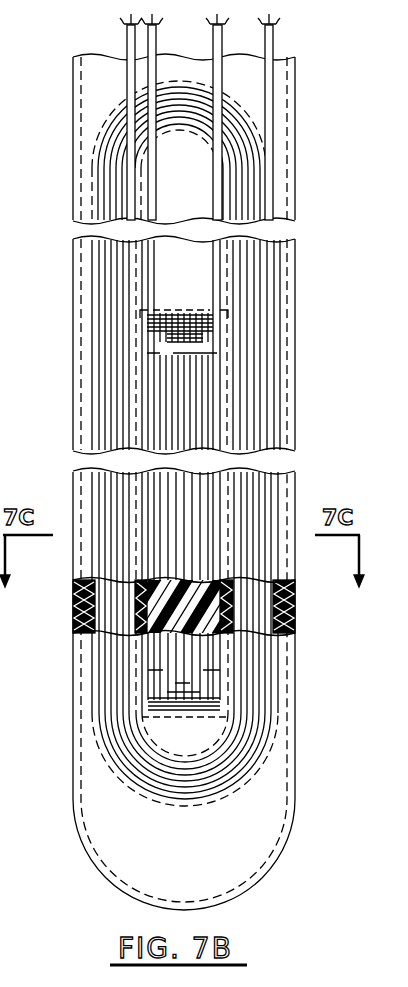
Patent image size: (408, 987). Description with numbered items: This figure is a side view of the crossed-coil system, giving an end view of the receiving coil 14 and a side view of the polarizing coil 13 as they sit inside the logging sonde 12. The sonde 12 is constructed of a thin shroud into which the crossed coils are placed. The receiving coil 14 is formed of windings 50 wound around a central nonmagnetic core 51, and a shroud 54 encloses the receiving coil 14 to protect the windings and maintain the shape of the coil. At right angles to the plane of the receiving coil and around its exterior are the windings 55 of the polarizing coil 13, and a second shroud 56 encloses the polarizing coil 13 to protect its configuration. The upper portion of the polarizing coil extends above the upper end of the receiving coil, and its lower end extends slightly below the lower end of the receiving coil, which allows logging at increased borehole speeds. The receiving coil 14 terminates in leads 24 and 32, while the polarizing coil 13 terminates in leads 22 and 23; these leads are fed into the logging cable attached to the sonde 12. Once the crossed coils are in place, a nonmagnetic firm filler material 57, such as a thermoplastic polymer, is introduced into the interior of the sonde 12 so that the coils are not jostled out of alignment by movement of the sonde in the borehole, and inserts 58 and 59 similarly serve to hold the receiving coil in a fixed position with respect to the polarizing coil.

The logging sonde 12 is at (226, 847).
The polarizing coil 13 is at (246, 175).
The receiving coil 14 is at (186, 398).
The lead 22 is at (127, 42).
The lead 23 is at (273, 40).
The lead 24 is at (157, 38).
The lead 32 is at (222, 40).
The windings 50 is at (200, 518).
The central nonmagnetic core 51 is at (207, 628).
The shroud 54 is at (187, 308).
The windings 55 is at (245, 282).
The second shroud 56 is at (137, 595).
The nonmagnetic firm filler material 57 is at (73, 605).
The insert 58 is at (177, 180).
The insert 59 is at (163, 735).